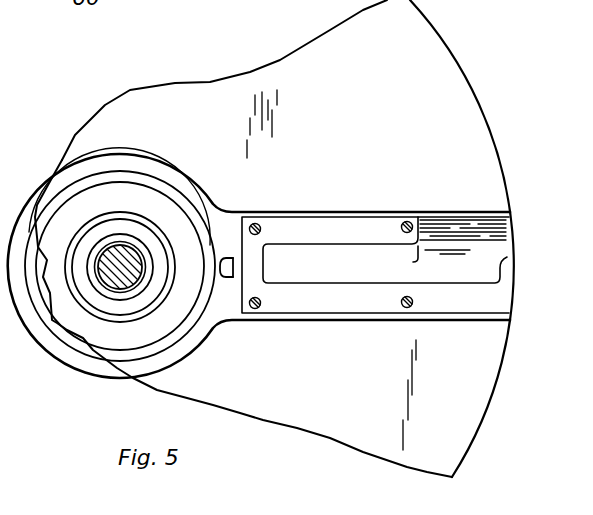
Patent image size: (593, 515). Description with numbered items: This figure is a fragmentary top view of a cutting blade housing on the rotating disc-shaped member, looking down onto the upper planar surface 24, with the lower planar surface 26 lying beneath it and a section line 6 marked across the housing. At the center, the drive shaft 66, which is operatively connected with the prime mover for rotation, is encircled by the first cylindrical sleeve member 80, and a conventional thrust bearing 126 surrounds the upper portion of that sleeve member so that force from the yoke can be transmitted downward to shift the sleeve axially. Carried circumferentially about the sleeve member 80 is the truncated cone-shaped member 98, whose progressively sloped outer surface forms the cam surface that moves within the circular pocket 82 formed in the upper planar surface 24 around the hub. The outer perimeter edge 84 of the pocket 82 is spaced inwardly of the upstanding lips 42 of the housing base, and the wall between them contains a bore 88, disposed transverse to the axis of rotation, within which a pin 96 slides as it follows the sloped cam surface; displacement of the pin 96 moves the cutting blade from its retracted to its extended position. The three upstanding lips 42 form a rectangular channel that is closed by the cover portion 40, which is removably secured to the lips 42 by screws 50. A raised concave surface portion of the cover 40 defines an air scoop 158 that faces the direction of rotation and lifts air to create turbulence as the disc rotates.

The section line 6- 6 is at (517, 366).
The upper planar surface 24 is at (440, 80).
The lower planar surface 26 is at (457, 122).
The cover portion 40 is at (275, 222).
The upstanding lips 42 is at (355, 320).
The screws 50 is at (255, 310).
The drive shaft 66 is at (115, 277).
The first cylindrical sleeve member 80 is at (77, 278).
The circular pocket 82 is at (138, 185).
The outer perimeter edge 84 is at (184, 192).
The bore 88 is at (232, 267).
The pin 96 is at (222, 273).
The truncated cone-shaped member 98 is at (67, 173).
The thrust bearing 126 is at (118, 323).
The air scoop 158 is at (460, 228).